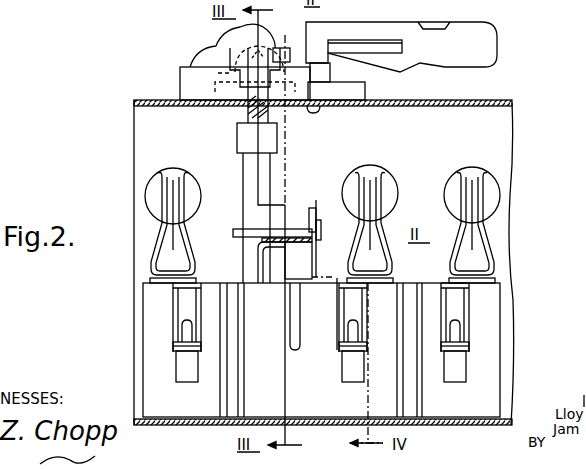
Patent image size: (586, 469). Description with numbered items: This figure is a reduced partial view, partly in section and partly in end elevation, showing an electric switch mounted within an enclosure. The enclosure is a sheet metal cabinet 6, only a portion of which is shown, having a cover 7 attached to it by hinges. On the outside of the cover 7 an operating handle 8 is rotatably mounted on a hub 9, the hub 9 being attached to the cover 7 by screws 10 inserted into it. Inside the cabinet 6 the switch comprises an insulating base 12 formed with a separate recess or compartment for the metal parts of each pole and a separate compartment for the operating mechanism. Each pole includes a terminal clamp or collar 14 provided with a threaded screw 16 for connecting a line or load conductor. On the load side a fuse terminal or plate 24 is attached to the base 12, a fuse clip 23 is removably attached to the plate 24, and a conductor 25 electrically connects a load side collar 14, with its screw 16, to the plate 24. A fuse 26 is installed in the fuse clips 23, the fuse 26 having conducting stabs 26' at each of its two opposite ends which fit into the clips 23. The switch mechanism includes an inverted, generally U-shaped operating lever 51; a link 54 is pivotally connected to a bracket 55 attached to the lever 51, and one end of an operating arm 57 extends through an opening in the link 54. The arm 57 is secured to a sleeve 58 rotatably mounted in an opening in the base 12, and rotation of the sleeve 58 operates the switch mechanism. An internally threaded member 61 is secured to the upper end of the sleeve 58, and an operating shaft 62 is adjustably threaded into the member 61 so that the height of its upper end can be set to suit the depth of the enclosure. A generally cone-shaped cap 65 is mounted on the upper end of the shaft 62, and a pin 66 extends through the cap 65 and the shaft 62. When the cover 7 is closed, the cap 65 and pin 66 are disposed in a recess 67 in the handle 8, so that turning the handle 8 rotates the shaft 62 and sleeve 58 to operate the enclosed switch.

The sheet metal cabinet 6 is at (165, 425).
The cover 7 is at (488, 100).
The operating handle 8 is at (404, 22).
The hub 9 is at (180, 80).
The screws 10 is at (316, 111).
The insulating base 12 is at (488, 361).
The terminal clamp or collar 14 is at (462, 345).
The threaded screw 16 is at (460, 327).
The fuse clip 23 is at (164, 240).
The load side fuse terminal or plate 24 is at (455, 282).
The conductor 25 is at (458, 298).
The fuse 26 is at (322, 183).
The conducting stabs 26' is at (322, 159).
The U-shaped operating lever 51 is at (257, 248).
The link 54 is at (314, 206).
The bracket 55 is at (307, 219).
The operating arm 57 is at (240, 229).
The sleeve 58 is at (271, 188).
The internally threaded member 61 is at (277, 136).
The operating shaft 62 is at (269, 115).
The cone-shaped cap 65 is at (271, 46).
The pin 66 is at (242, 58).
The recess 67 is at (282, 52).